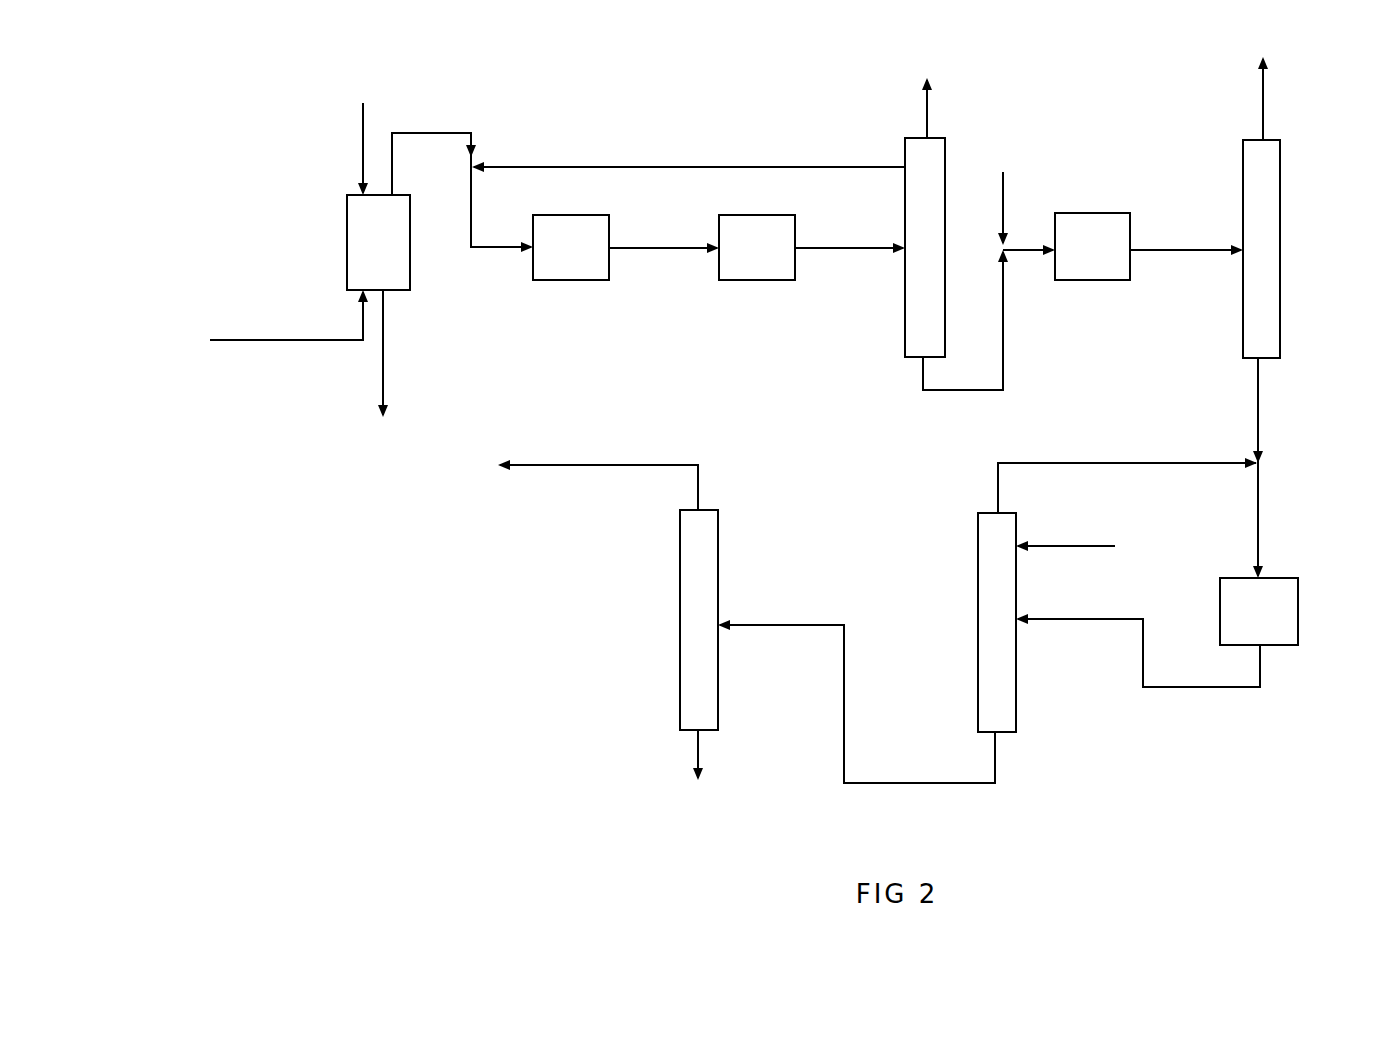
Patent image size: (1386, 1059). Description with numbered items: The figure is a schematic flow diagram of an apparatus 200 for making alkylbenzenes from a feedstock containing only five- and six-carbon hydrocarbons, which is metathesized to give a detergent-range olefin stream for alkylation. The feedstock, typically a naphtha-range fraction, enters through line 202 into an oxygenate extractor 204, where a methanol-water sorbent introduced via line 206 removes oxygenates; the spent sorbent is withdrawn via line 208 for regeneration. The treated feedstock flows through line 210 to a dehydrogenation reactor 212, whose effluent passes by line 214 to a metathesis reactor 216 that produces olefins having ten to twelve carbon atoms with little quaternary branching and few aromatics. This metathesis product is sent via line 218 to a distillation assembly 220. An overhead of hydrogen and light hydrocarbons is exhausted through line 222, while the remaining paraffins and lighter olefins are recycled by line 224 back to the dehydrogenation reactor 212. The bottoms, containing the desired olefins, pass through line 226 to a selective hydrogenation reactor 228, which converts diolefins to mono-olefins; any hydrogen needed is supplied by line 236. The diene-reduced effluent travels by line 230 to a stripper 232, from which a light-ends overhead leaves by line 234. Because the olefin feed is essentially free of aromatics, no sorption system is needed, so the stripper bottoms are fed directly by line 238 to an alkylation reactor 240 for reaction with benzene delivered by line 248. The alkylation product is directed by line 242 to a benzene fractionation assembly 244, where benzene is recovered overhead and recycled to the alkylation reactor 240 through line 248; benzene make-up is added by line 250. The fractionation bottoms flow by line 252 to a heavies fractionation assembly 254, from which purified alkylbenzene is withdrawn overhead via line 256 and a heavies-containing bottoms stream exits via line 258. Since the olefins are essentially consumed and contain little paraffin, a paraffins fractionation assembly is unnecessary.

The apparatus 200 is at (182, 110).
The line 202 is at (260, 337).
The oxygenate extractor 204 is at (365, 250).
The line 206 is at (360, 150).
The line 208 is at (380, 377).
The line 210 is at (435, 130).
The dehydrogenation reactor 212 is at (575, 260).
The line 214 is at (680, 250).
The metathesis reactor 216 is at (763, 257).
The line 218 is at (863, 255).
The distillation assembly 220 is at (915, 308).
The line 222 is at (927, 118).
The line 224 is at (700, 167).
The line 226 is at (963, 390).
The selective hydrogenation reactor 228 is at (1100, 253).
The line 230 is at (1193, 252).
The stripper 232 is at (1262, 285).
The line 234 is at (1262, 118).
The line 236 is at (1007, 190).
The line 238 is at (1260, 498).
The alkylation reactor 240 is at (1272, 622).
The line 242 is at (1182, 690).
The benzene fractionation assembly 244 is at (993, 597).
The line 248 is at (1112, 462).
The line 250 is at (1085, 547).
The line 252 is at (843, 730).
The heavies fractionation assembly 254 is at (693, 653).
The line 256 is at (627, 467).
The line 258 is at (698, 745).